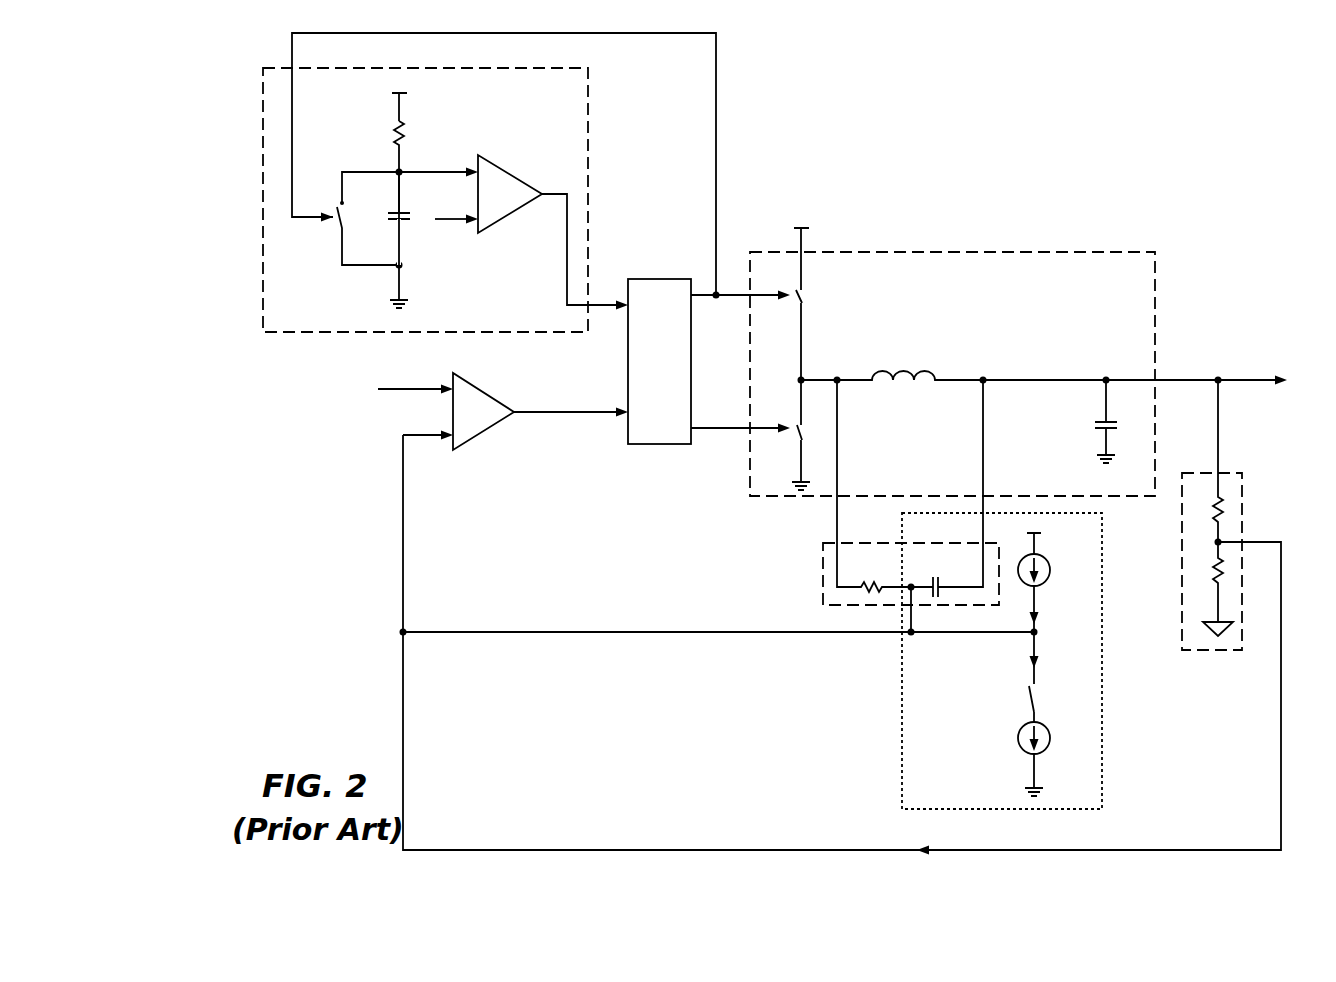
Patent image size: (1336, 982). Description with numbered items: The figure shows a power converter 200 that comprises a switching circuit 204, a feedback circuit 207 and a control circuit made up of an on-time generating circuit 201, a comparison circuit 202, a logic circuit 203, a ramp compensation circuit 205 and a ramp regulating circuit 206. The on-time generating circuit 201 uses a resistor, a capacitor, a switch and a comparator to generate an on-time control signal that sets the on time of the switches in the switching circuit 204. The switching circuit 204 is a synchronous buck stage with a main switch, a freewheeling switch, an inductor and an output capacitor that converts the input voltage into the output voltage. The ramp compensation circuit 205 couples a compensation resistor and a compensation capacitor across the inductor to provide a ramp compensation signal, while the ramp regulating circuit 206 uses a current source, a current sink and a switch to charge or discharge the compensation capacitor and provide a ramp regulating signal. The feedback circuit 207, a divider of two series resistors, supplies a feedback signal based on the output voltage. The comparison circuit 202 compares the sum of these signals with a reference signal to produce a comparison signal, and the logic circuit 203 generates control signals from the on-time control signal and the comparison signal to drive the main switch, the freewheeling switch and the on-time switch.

The power converter 200 is at (1152, 64).
The on-time generating circuit 201 is at (263, 222).
The comparison circuit 202 is at (490, 437).
The logic circuit 203 is at (638, 444).
The switching circuit 204 is at (925, 252).
The ramp compensation circuit 205 is at (822, 590).
The ramp regulating circuit 206 is at (1102, 750).
The feedback circuit 207 is at (1227, 650).